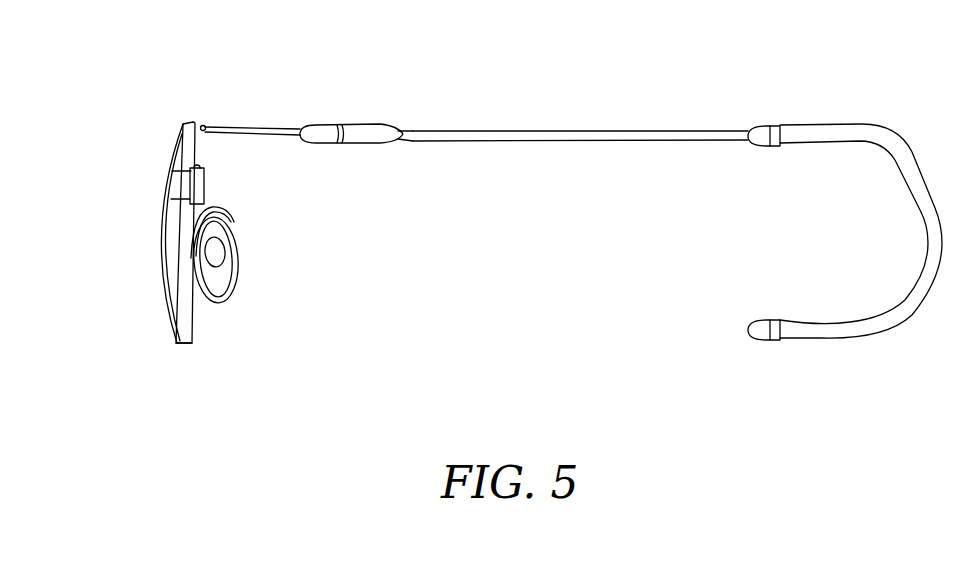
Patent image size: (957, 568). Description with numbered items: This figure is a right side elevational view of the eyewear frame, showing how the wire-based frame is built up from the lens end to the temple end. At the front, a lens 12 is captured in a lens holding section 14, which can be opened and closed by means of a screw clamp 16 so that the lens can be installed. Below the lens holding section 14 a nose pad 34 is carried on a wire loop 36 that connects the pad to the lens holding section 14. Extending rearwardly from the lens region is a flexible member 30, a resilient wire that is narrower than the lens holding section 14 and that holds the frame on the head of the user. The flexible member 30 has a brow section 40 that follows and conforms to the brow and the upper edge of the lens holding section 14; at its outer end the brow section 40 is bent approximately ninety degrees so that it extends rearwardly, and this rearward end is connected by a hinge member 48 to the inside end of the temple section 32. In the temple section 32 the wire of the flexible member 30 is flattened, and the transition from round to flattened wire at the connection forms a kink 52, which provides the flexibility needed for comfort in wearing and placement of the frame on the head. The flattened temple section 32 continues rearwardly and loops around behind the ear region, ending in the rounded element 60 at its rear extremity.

The lens 12 is at (157, 220).
The lens holding section 14 is at (193, 325).
The screw clamp 16 is at (199, 186).
The flexible member 30 is at (498, 130).
The temple section 32 is at (557, 140).
The nose pad 34 is at (217, 282).
The wire loop 36 is at (213, 207).
The brow section 40 is at (203, 128).
The hinge member 48 is at (378, 128).
The kink 52 is at (413, 128).
The neck loop 60 is at (930, 242).